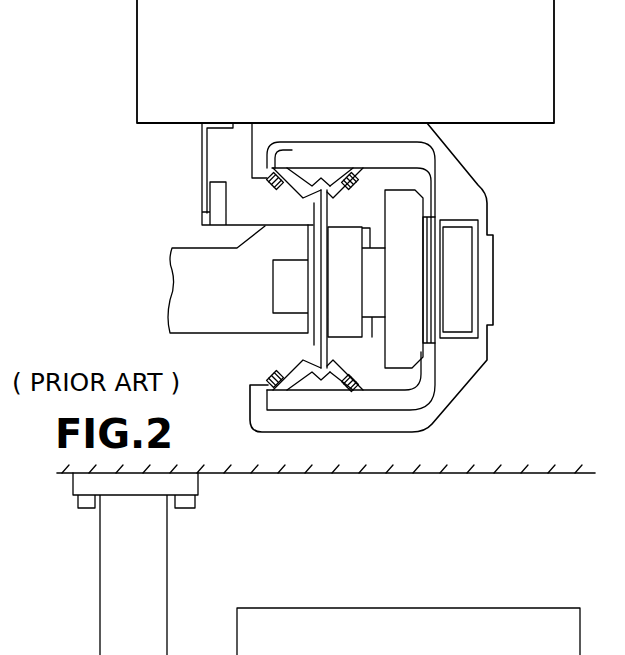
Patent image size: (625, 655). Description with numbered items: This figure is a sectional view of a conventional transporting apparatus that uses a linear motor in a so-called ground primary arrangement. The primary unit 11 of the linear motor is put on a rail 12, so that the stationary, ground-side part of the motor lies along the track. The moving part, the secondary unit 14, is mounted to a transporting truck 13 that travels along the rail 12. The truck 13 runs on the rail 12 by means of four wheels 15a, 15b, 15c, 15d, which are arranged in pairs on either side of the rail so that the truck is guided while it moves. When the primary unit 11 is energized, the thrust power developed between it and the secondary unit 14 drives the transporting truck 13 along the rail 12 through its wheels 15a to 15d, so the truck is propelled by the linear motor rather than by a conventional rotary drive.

The primary unit 11 is at (413, 237).
The rail 12 is at (320, 352).
The transporting truck 13 is at (478, 378).
The secondary unit 14 is at (433, 344).
The wheel 15a is at (292, 176).
The wheel 15b is at (333, 172).
The wheel 15c is at (294, 384).
The wheel 15d is at (329, 386).